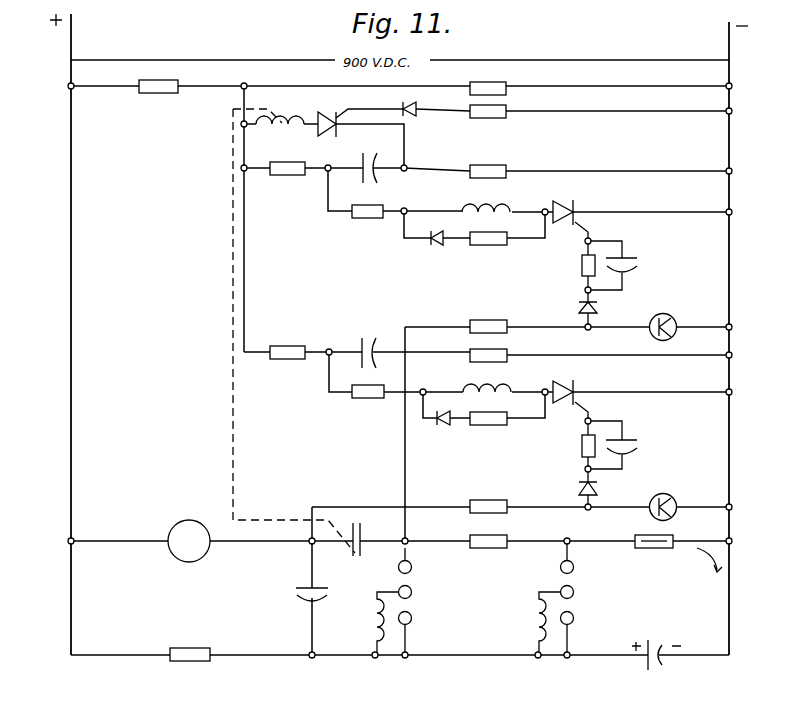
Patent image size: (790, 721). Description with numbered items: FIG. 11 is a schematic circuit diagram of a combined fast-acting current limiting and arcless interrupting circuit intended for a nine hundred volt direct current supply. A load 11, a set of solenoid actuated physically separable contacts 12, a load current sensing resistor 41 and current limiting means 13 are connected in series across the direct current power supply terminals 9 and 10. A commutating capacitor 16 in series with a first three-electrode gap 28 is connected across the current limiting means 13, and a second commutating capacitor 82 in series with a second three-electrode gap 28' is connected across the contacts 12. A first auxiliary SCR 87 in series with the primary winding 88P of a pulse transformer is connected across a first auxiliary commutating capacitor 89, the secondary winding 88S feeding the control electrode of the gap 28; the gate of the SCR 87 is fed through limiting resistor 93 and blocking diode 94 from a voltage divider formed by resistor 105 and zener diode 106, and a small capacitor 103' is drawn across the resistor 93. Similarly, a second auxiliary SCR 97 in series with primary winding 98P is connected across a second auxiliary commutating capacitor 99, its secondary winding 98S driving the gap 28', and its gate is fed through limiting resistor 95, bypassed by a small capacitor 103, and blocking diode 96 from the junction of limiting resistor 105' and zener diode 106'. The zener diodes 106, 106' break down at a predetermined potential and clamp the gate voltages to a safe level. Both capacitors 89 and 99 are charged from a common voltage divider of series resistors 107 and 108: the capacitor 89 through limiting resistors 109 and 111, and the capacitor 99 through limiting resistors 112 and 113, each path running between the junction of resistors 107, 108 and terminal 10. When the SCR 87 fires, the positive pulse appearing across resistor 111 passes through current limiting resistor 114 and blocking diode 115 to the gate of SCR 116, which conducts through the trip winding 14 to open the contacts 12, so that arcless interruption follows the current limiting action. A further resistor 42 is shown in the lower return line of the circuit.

The power supply terminal 9 is at (71, 43).
The power supply terminal 10 is at (731, 47).
The voltage dividing resistor 107 is at (167, 91).
The voltage dividing resistor 108 is at (498, 84).
The trip winding 14 is at (283, 132).
The SCR 116 is at (325, 118).
The blocking diode 115 is at (412, 114).
The current limiting resistor 114 is at (498, 111).
The limiting resistor 109 is at (289, 175).
The first auxiliary commutating capacitor 89 is at (376, 176).
The limiting resistor 111 is at (488, 168).
The primary winding 88P is at (507, 199).
The first auxiliary SCR 87 is at (579, 207).
The limiting resistor 93 is at (582, 268).
The capacitor 103' is at (637, 264).
The blocking diode 94 is at (580, 308).
The resistor 105 is at (494, 311).
The zener diode 106 is at (683, 312).
The limiting resistor 112 is at (290, 358).
The second auxiliary commutating capacitor 99 is at (362, 342).
The limiting resistor 113 is at (505, 354).
The primary winding 98P is at (508, 392).
The second auxiliary SCR 97 is at (579, 385).
The limiting resistor 95 is at (582, 447).
The bypass capacitor 103 is at (633, 441).
The blocking diode 96 is at (580, 486).
The limiting resistor 105' is at (494, 490).
The zener diode 106' is at (684, 493).
The second commutating capacitor 82 is at (296, 586).
The load 11 is at (177, 525).
The set of contacts 12 is at (350, 550).
The current sensing resistor 41 is at (495, 548).
The current limiting means 13 is at (655, 548).
The second three-electrode gap 28' is at (427, 601).
The secondary winding 98S is at (372, 612).
The three-electrode gap 28 is at (592, 598).
The secondary winding 88S is at (530, 616).
The resistor 42 is at (196, 662).
The commutating capacitor 16 is at (667, 663).